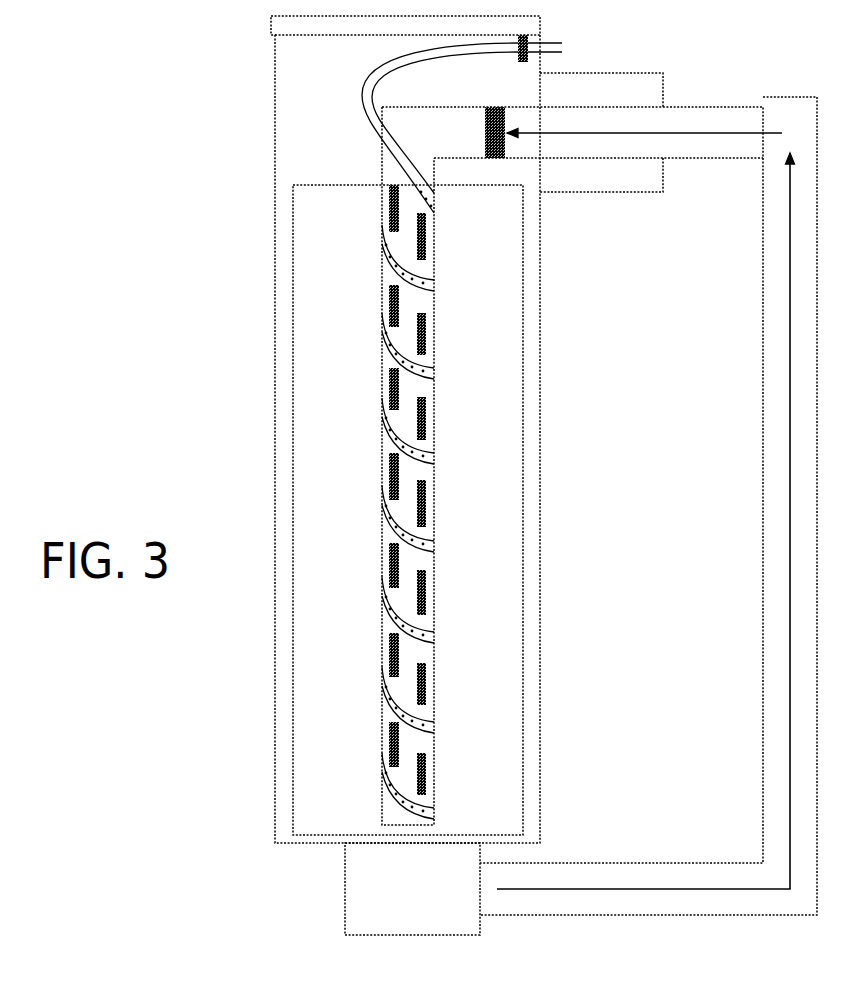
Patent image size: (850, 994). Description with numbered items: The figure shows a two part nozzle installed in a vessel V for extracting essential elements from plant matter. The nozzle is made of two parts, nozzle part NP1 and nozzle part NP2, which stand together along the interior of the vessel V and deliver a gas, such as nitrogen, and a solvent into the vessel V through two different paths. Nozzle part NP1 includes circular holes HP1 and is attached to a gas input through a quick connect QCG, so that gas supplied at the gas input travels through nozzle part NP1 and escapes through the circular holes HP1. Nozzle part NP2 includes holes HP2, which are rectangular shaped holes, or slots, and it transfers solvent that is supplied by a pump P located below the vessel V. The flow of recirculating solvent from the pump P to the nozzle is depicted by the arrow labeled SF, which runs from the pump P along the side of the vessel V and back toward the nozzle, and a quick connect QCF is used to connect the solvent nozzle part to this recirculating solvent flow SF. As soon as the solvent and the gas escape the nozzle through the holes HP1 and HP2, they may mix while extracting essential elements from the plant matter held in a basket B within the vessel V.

The basket B is at (291, 500).
The vessel V is at (220, 290).
The nozzle part NP1 is at (524, 522).
The nozzle part NP2 is at (437, 402).
The circular holes HP1 is at (437, 460).
The holes HP2 is at (386, 388).
The quick connect QCF is at (507, 158).
The quick connect QCG is at (516, 57).
The recirculating solvent flow SF is at (648, 506).
The pump P is at (412, 889).